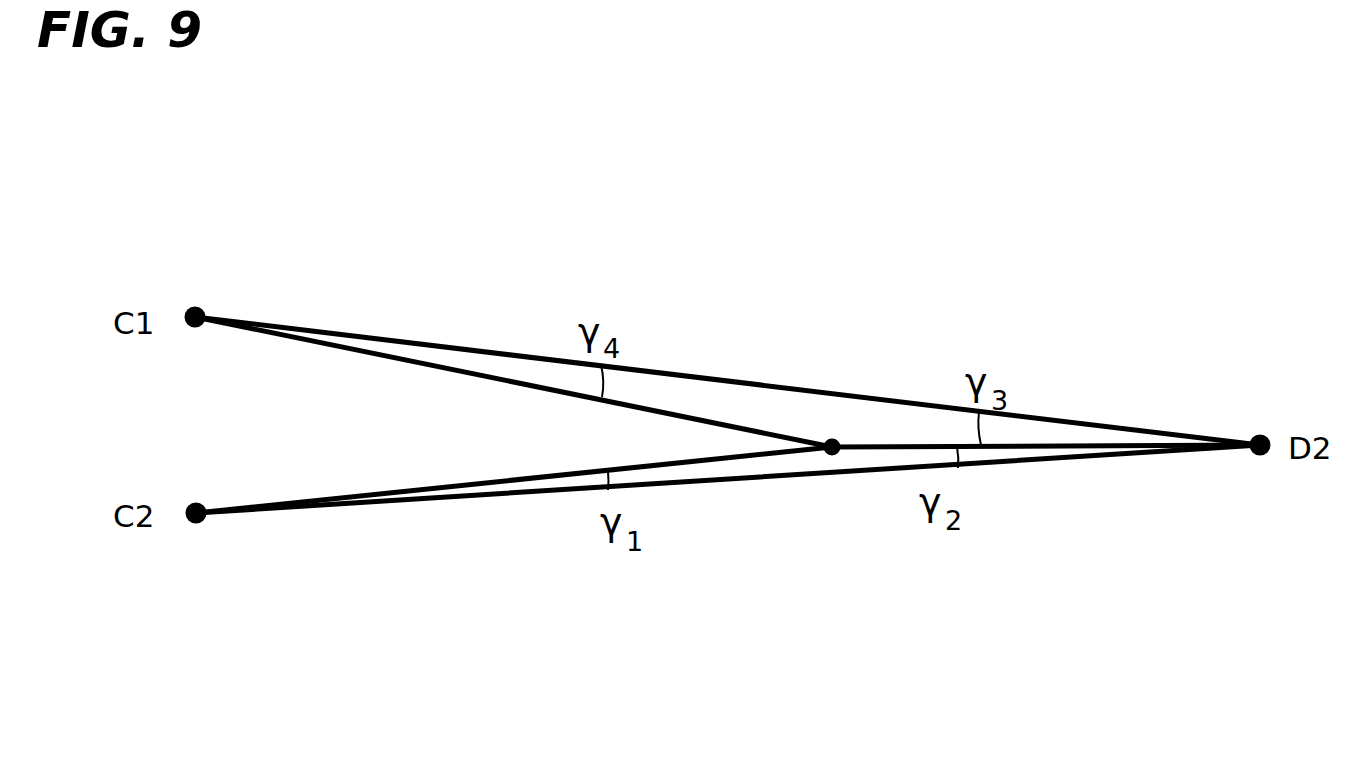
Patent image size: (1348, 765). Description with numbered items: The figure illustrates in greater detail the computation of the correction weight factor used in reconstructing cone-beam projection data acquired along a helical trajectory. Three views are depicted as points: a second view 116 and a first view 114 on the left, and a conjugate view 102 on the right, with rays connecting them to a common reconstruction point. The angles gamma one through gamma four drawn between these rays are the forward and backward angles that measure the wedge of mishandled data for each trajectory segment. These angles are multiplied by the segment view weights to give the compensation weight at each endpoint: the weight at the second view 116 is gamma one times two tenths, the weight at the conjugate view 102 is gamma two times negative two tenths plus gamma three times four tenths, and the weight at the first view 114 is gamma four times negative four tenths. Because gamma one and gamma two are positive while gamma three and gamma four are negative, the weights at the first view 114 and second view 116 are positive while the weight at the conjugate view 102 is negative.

The view C1 114 is at (198, 303).
The view C2 116 is at (190, 525).
The view D2 102 is at (1263, 435).